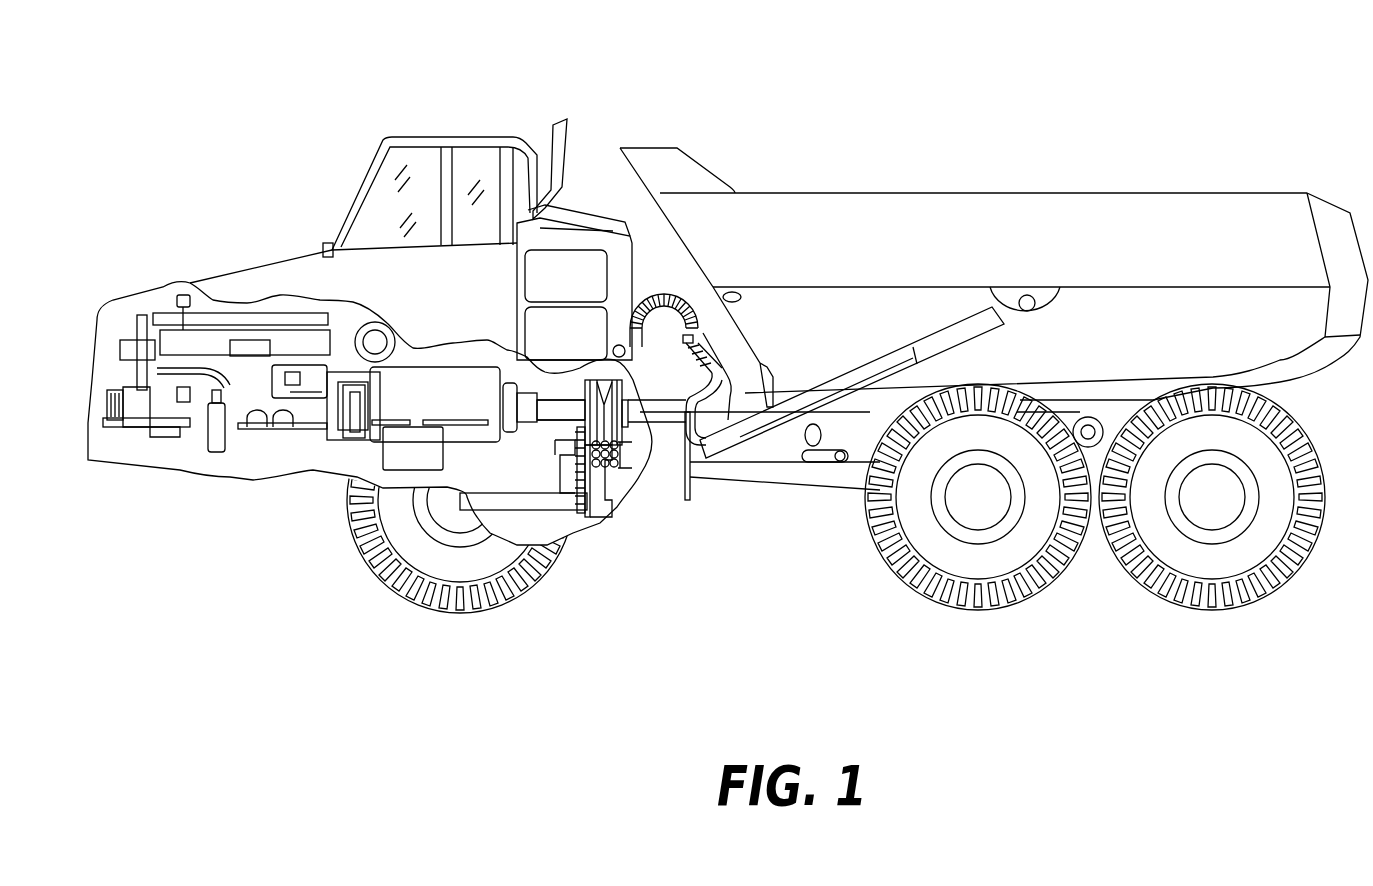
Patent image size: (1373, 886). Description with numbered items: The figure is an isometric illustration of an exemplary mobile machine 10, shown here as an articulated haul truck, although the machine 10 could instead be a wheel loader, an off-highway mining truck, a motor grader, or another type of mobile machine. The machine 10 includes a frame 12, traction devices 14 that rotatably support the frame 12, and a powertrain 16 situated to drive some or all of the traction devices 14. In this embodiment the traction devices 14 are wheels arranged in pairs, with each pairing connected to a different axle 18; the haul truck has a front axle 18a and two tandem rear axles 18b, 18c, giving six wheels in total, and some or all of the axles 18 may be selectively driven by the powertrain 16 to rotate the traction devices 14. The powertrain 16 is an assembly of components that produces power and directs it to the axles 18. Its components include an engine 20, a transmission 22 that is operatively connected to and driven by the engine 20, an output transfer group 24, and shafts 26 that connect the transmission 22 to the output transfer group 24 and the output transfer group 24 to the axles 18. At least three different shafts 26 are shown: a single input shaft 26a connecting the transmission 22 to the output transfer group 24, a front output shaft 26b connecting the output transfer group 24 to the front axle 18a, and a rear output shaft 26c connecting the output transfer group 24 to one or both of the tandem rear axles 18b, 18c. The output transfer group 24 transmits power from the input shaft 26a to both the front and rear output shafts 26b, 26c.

The mobile machine 10 is at (779, 288).
The frame 12 is at (855, 440).
The traction devices 14 is at (440, 613).
The powertrain 16 is at (235, 458).
The axle 18 is at (1045, 350).
The front axle 18a is at (457, 517).
The tandem rear axle 18b is at (972, 503).
The tandem rear axle 18c is at (1205, 503).
The engine 20 is at (258, 401).
The transmission 22 is at (412, 407).
The output transfer group 24 is at (627, 485).
The shafts 26 is at (567, 388).
The input shaft 26a is at (553, 413).
The front output shaft 26b is at (532, 508).
The rear output shaft 26c is at (637, 462).